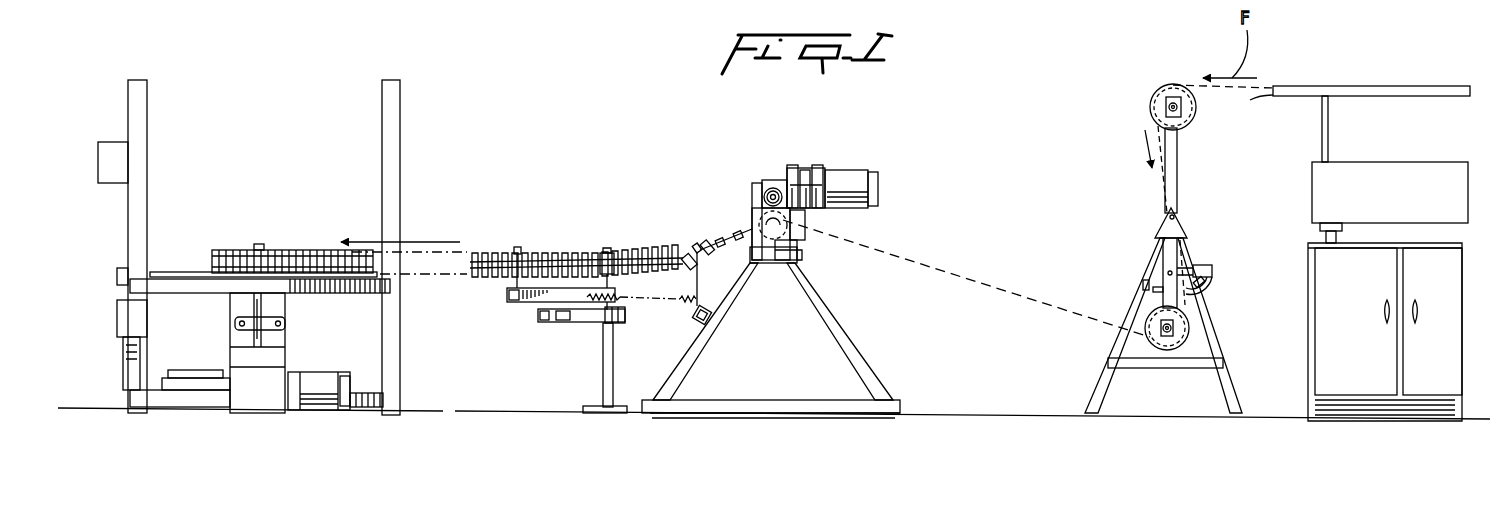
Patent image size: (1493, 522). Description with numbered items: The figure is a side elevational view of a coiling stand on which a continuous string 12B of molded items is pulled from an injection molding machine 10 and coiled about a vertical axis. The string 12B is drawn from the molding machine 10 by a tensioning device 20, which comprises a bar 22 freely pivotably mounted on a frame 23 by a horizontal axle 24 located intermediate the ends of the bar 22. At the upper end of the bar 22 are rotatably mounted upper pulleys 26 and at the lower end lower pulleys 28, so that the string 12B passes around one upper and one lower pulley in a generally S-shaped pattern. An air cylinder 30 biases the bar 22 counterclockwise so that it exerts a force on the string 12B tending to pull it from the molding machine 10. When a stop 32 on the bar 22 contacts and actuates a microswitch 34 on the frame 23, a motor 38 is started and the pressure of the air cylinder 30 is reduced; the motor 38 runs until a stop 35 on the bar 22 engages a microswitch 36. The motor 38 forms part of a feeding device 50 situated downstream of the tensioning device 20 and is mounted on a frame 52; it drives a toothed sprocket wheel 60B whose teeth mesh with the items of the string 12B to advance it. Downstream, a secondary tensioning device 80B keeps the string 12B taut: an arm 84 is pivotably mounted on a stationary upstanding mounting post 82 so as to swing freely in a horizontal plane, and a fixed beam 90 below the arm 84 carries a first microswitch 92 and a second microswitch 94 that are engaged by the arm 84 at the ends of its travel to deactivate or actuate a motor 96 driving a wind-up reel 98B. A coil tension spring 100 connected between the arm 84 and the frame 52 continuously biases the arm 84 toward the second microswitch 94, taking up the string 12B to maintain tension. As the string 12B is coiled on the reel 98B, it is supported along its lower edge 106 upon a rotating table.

The injection molding machine 10 is at (1315, 76).
The continuous string 12B is at (652, 249).
The tensioning device 20 is at (1170, 238).
The bar 22 is at (1178, 164).
The frame 23 is at (1100, 369).
The horizontal axle 24 is at (1178, 219).
The upper pulleys 26 is at (1158, 100).
The lower pulleys 28 is at (1188, 331).
The air cylinder 30 is at (1212, 267).
The stop 32 is at (1201, 298).
The microswitch 34 is at (1212, 284).
The stop 35 is at (1155, 291).
The microswitch 36 is at (1147, 285).
The motor 38 is at (857, 173).
The feeding device 50 is at (805, 160).
The frame 52 is at (858, 358).
The toothed sprocket wheel 60B is at (795, 240).
The secondary tensioning device 80B is at (540, 246).
The mounting post 82 is at (612, 355).
The arm 84 is at (517, 301).
The fixed beam 90 is at (578, 319).
The first microswitch 92 is at (545, 319).
The second microswitch 94 is at (607, 320).
The motor 96 is at (341, 379).
The wind-up reel 98B is at (243, 235).
The coil tension spring 100 is at (686, 302).
The lower edge 106 is at (480, 278).